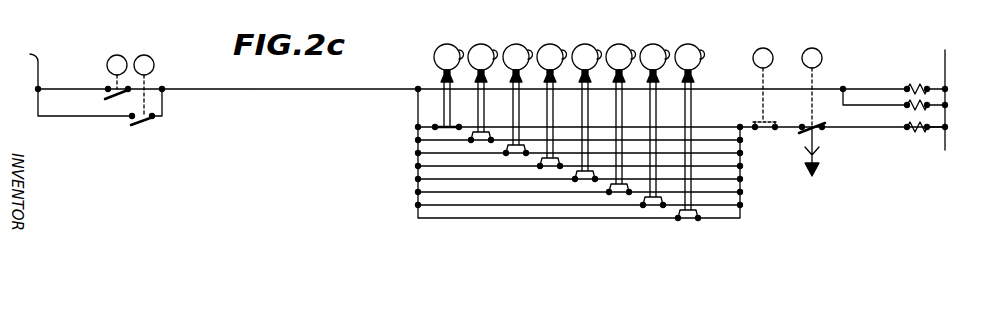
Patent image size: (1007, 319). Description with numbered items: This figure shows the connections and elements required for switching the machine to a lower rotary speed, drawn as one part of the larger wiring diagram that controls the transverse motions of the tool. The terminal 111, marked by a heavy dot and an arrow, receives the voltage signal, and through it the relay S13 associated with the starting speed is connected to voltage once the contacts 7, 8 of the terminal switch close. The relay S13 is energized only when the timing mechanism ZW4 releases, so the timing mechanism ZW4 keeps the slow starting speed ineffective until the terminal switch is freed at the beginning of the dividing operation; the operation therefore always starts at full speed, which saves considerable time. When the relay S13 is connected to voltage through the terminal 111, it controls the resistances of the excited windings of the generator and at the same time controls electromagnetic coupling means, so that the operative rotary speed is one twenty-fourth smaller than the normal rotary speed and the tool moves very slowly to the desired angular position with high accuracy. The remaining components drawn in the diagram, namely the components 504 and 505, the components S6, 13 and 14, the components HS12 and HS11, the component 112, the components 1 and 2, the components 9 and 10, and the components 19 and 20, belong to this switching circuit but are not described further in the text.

The supply line 504 is at (19, 68).
The return line 505 is at (947, 71).
The switch S6 is at (113, 56).
The switch contact 13 is at (137, 113).
The switch contact 14 is at (152, 110).
The auxiliary relay HS12 is at (150, 56).
The auxiliary relay HS11 is at (766, 48).
The timing mechanism ZW4 is at (814, 48).
The relay S13 is at (902, 125).
The terminal 111 is at (385, 115).
The bus bar 112 is at (740, 127).
The stepping relay 1 is at (442, 47).
The stepping relay 2 is at (476, 47).
The contact of terminal switch 7 is at (648, 47).
The contact of terminal switch 8 is at (683, 47).
The resistor terminal 9 is at (899, 117).
The resistor terminal 10 is at (932, 117).
The relay contact 19 is at (755, 135).
The relay contact 20 is at (776, 135).